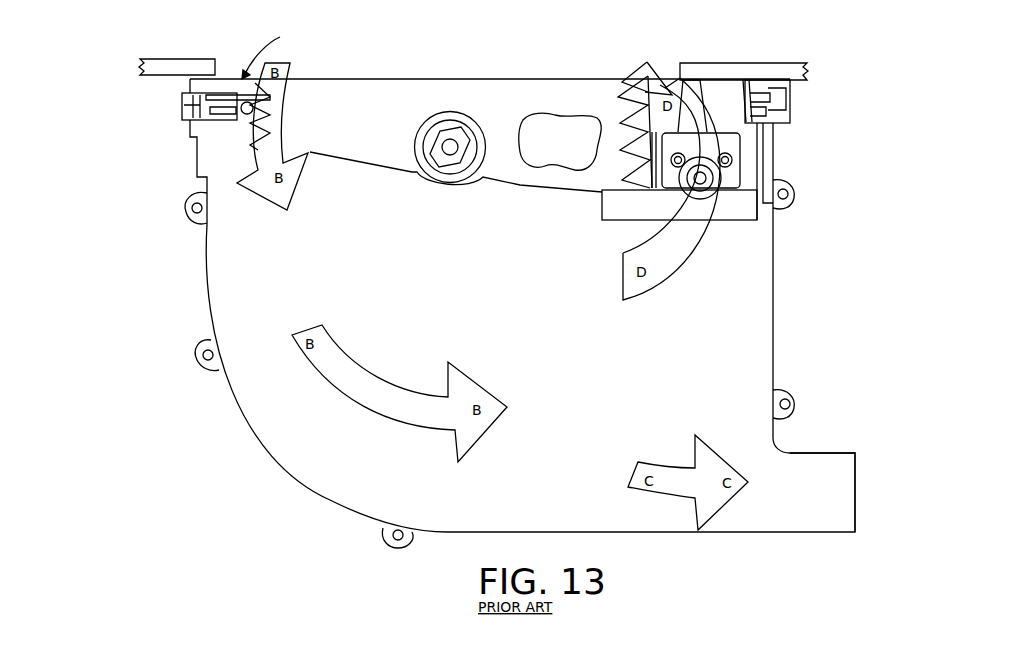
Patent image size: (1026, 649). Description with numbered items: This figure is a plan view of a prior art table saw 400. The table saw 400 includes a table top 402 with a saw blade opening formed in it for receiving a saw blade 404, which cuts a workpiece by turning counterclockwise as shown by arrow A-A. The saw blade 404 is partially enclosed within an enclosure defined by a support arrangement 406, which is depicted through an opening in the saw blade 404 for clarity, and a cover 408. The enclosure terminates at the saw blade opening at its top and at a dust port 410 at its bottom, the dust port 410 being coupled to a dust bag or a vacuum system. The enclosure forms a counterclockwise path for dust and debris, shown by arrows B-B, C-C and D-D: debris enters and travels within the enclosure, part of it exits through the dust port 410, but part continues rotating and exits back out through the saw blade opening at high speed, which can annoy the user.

The table saw 400 is at (112, 80).
The table top 402 is at (788, 63).
The saw blade 404 is at (568, 88).
The support arrangement 406 is at (540, 119).
The cover 408 is at (755, 252).
The dust port 410 is at (856, 476).